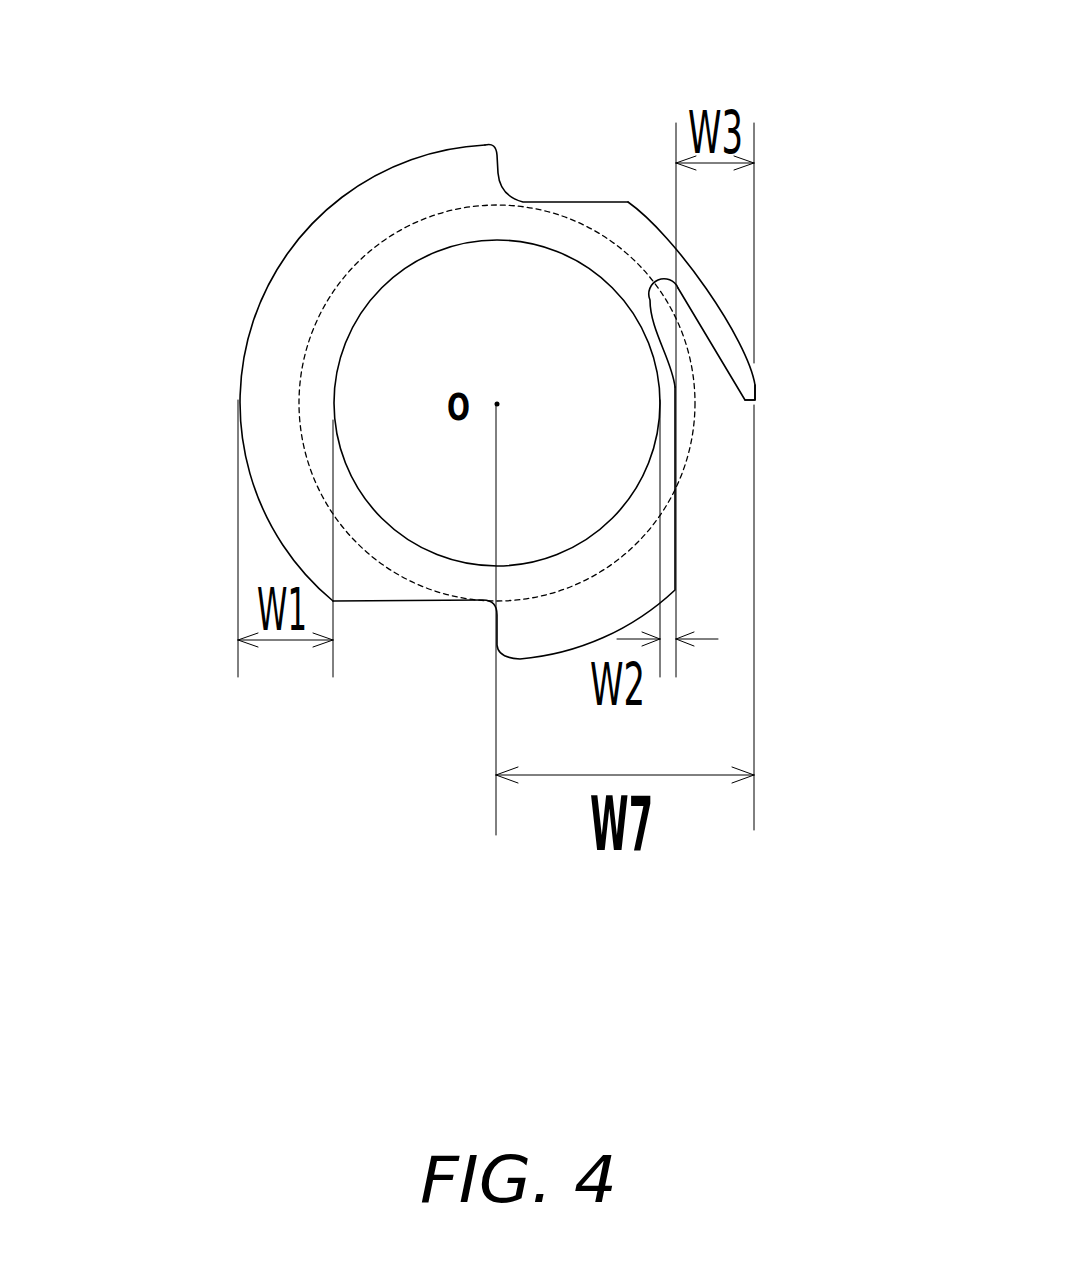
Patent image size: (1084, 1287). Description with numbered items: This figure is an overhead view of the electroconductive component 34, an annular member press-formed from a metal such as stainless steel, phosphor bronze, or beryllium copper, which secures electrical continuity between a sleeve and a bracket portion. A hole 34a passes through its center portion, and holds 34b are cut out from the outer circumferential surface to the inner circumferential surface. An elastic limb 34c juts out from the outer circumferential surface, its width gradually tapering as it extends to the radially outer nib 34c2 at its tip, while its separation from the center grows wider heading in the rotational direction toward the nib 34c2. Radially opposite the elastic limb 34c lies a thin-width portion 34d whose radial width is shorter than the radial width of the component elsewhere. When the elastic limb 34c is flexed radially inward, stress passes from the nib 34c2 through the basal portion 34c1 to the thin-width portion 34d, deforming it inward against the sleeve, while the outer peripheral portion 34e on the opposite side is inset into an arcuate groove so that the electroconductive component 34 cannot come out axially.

The electroconductive component 34 is at (218, 402).
The hole 34a is at (417, 362).
The holds 34b is at (567, 202).
The elastic limb 34c is at (735, 340).
The basal portion 34c1 is at (657, 282).
The radially outer nib 34c2 is at (756, 386).
The thin-width portion 34d is at (668, 440).
The outer peripheral portion 34e is at (278, 400).